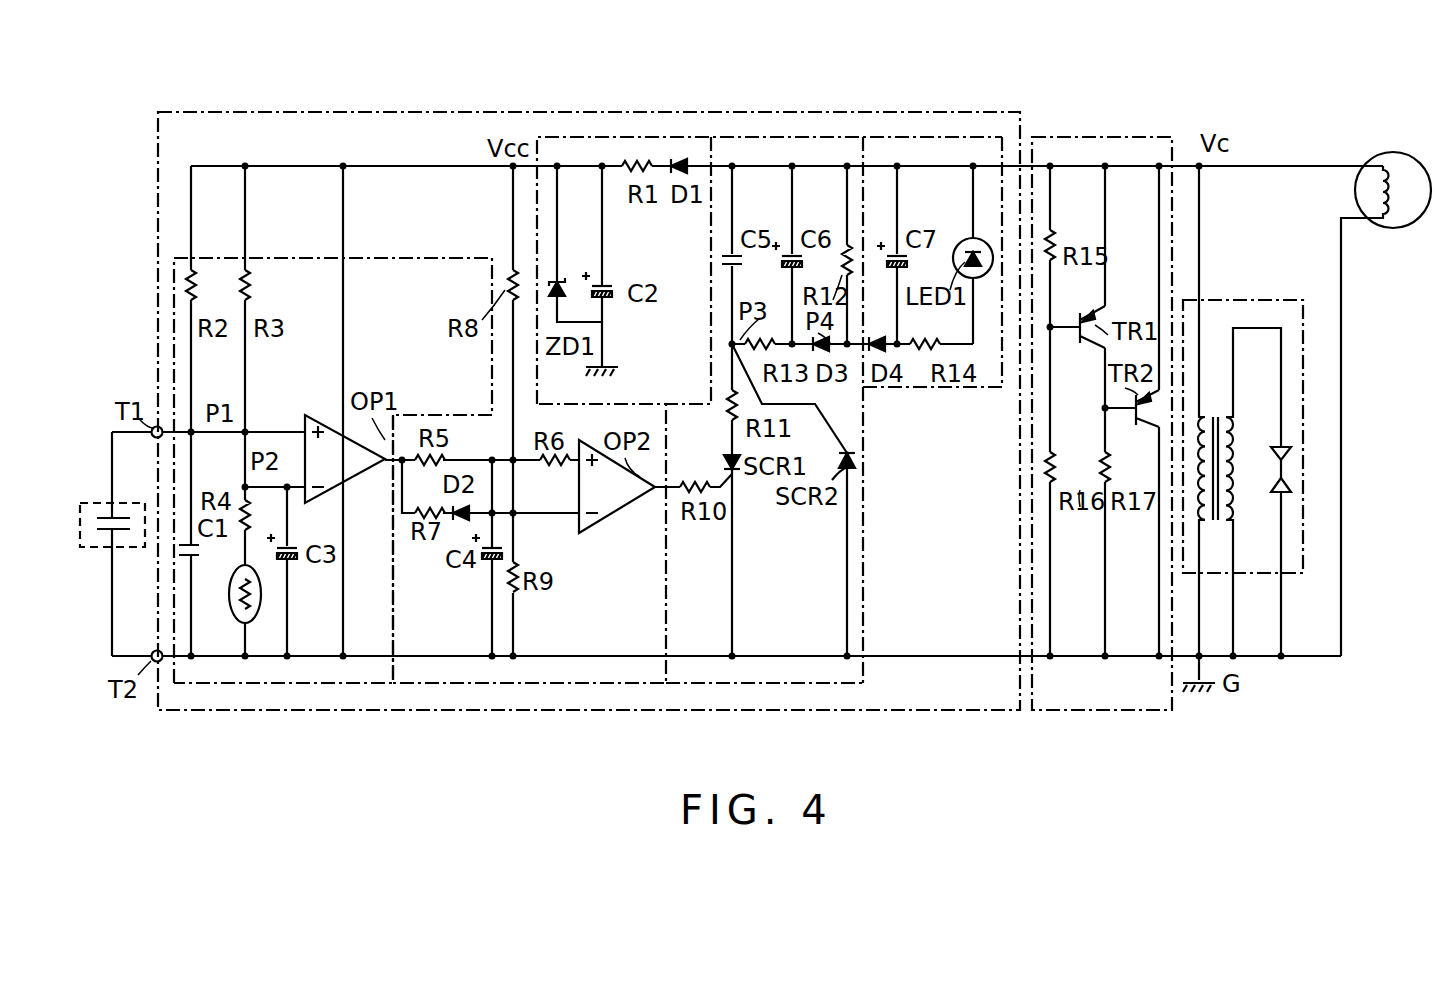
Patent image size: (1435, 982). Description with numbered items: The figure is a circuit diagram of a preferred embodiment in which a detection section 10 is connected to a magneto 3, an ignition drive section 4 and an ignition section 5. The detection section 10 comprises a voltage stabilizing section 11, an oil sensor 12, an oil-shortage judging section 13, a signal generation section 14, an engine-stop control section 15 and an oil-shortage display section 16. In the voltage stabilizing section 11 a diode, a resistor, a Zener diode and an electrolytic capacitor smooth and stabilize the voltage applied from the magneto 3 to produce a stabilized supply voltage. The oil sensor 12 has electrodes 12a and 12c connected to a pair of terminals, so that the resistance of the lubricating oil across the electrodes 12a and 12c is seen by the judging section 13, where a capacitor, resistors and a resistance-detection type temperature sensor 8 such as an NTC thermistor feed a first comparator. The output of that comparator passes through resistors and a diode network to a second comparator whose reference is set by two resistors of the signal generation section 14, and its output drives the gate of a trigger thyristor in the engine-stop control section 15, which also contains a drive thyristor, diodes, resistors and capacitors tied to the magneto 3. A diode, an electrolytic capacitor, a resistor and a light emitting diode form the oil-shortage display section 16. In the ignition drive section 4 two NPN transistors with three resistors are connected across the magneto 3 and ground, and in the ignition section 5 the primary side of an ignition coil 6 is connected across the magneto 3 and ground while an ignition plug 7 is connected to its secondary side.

The magneto 3 is at (1393, 152).
The ignition drive section 4 is at (1125, 137).
The ignition section 5 is at (1303, 560).
The ignition coil 6 is at (1213, 415).
The ignition plug 7 is at (1292, 462).
The resistance-detection type temperature sensor 8 is at (235, 585).
The detection section 10 is at (932, 710).
The voltage stabilizing section 11 is at (615, 137).
The oil sensor 12 is at (80, 525).
The electrode 12a is at (100, 536).
The electrode 12c is at (99, 512).
The oil-shortage judging section 13 is at (311, 683).
The signal generation section 14 is at (570, 683).
The engine-stop control section 15 is at (750, 683).
The oil-shortage display section 16 is at (953, 387).